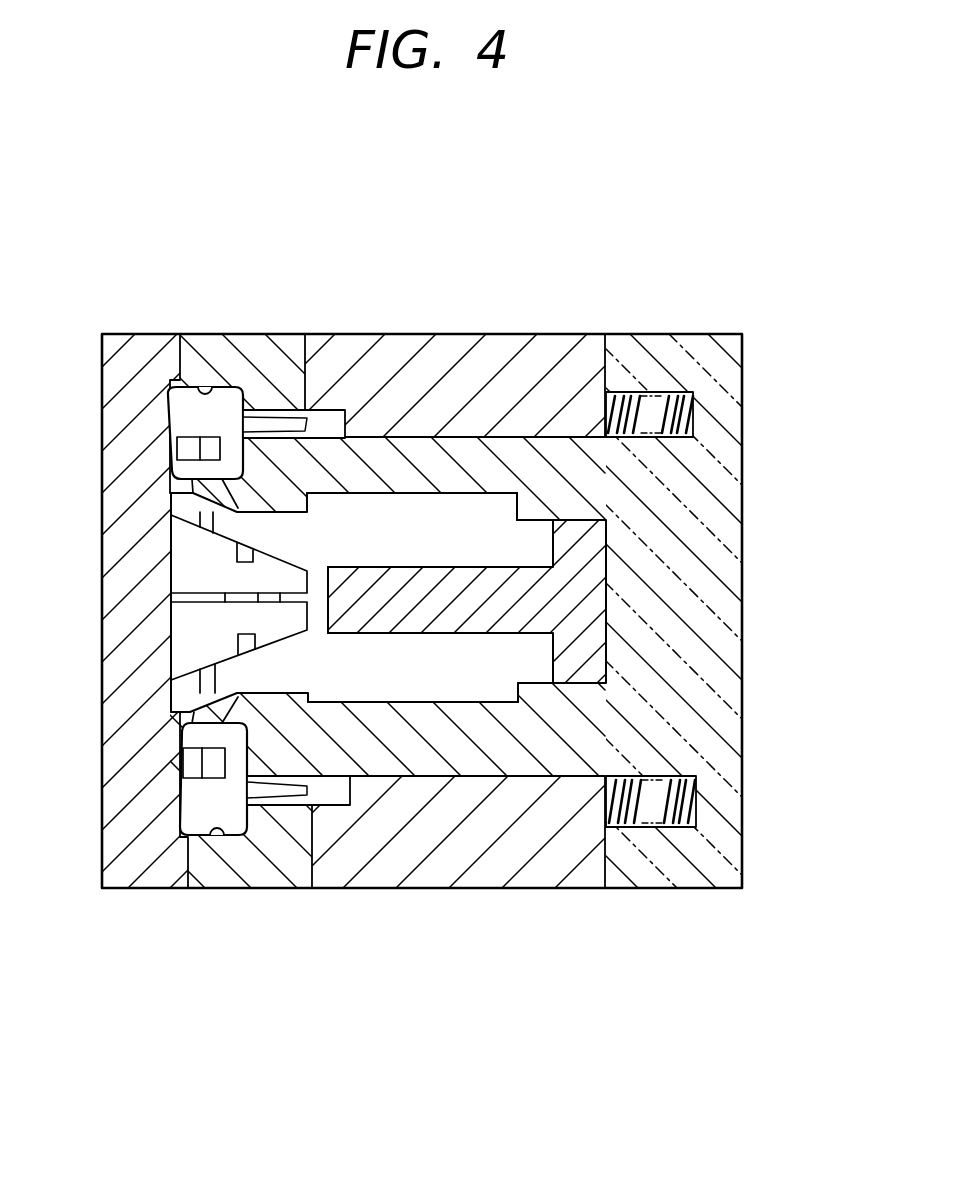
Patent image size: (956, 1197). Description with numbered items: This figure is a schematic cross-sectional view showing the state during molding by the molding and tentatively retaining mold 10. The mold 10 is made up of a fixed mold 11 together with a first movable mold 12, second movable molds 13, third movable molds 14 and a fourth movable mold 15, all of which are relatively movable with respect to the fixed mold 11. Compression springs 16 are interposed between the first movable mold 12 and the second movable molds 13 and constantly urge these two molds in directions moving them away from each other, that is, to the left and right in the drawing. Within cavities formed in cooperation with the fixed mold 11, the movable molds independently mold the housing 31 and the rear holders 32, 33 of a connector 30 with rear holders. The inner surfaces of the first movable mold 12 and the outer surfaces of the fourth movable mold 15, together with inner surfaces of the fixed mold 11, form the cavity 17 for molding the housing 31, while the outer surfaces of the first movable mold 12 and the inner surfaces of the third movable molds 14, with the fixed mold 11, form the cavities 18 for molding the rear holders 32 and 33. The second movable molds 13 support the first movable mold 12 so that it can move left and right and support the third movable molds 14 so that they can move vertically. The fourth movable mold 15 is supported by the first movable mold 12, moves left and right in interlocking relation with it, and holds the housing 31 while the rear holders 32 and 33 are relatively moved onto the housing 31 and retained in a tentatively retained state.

The molding and tentatively retaining mold 10 is at (498, 262).
The fixed mold 11 is at (113, 601).
The first movable mold 12 is at (713, 608).
The second movable mold 13 is at (440, 360).
The third movable mold 14 is at (262, 360).
The fourth movable mold 15 is at (592, 634).
The compression spring 16 is at (648, 392).
The cavity 17 is at (447, 497).
The cavity 18 is at (203, 386).
The connector with rear holders 30 is at (377, 474).
The housing 31 is at (400, 677).
The rear holder 32 is at (184, 414).
The rear holder 33 is at (188, 794).